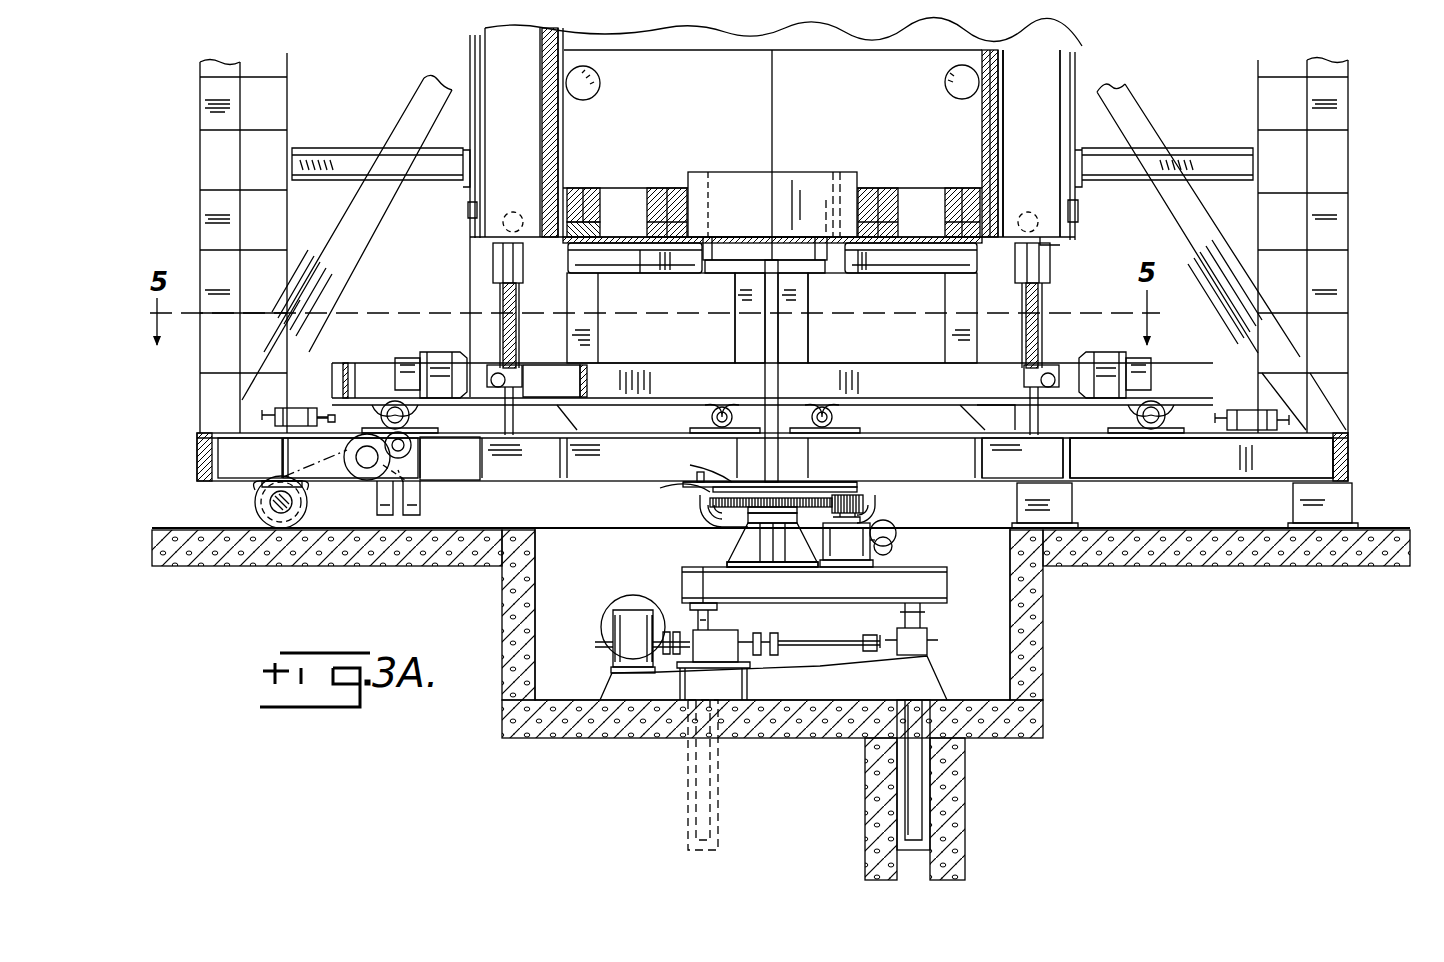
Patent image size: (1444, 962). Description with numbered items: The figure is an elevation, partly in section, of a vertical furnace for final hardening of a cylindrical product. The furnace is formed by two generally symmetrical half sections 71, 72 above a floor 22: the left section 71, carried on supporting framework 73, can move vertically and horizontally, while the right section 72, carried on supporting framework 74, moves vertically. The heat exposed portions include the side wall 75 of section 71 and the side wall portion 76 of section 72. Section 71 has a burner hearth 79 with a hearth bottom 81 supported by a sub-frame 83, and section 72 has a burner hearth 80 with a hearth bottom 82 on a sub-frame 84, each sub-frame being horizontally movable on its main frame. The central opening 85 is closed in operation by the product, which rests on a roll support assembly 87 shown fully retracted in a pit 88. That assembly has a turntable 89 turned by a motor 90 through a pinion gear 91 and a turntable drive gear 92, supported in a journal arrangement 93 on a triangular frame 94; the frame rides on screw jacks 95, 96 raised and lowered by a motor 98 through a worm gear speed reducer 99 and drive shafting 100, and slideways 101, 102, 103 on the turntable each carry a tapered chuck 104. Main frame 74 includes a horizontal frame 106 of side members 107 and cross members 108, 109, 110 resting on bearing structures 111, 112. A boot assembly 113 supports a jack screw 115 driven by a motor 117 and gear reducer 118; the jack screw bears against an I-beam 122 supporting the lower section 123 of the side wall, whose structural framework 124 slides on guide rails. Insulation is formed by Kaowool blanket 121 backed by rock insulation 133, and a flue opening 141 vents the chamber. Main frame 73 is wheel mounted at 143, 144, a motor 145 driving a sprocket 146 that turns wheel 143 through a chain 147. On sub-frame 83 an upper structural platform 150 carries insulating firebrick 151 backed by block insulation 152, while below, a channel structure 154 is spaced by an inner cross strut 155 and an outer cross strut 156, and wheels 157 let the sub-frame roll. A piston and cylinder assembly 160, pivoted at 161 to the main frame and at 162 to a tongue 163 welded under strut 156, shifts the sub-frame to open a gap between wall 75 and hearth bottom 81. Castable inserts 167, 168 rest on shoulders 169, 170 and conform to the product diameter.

The floor 22 is at (1362, 532).
The furnace half section 71 is at (468, 68).
The furnace half section 72 is at (1087, 118).
The supporting framework 73 is at (192, 152).
The supporting framework 74 is at (1357, 208).
The side wall 75 is at (576, 54).
The side wall portion 76 is at (888, 56).
The burner hearth 79 is at (660, 185).
The burner hearth 80 is at (952, 186).
The hearth bottom 81 is at (580, 192).
The hearth bottom 82 is at (868, 195).
The sub-frame 83 is at (598, 320).
The sub-frame 84 is at (938, 278).
The central opening 85 is at (715, 190).
The roll support assembly 87 is at (692, 512).
The pit 88 is at (578, 702).
The turntable 89 is at (695, 492).
The motor 90 is at (892, 545).
The pinion gear 91 is at (893, 523).
The turntable drive gear 92 is at (840, 493).
The journal arrangement 93 is at (762, 538).
The triangular frame 94 is at (935, 592).
The screw jack 95 is at (718, 636).
The screw jack 96 is at (927, 636).
The motor 98 is at (604, 628).
The worm gear speed reducer 99 is at (611, 662).
The drive shafting 100 is at (836, 643).
The slideway 101 is at (782, 492).
The slideway 102 is at (660, 488).
The slideway 103 is at (870, 492).
The tapered chuck 104 is at (700, 480).
The horizontally positioned frame 106 is at (1190, 491).
The side members 107 is at (1262, 480).
The cross member 108 is at (985, 458).
The cross member 109 is at (1075, 464).
The cross member 110 is at (1342, 456).
The bearing structure 111 is at (1074, 512).
The bearing structure 112 is at (1322, 522).
The boot assembly 113 is at (978, 405).
The jack screw 115 is at (1044, 302).
The motor 117 is at (455, 342).
The gear reducer 118 is at (1048, 348).
The ceramic fibre Kaowool blanket 121 is at (990, 62).
The I-beam 122 is at (1052, 272).
The lower section of furnace side wall 123 is at (1072, 82).
The structural framework 124 is at (1062, 234).
The rock insulation 133 is at (1030, 65).
The opening 141 is at (962, 63).
The wheel 143 is at (270, 540).
The wheel 144 is at (702, 522).
The motor 145 is at (375, 490).
The sprocket 146 is at (418, 492).
The chain 147 is at (322, 540).
The upper structural platform 150 is at (678, 265).
The insulating firebrick 151 is at (588, 205).
The block insulation 152 is at (598, 262).
The channel structure 154 is at (652, 372).
The inner cross strut 155 is at (585, 392).
The outer cross strut 156 is at (370, 352).
The wheels 157 is at (712, 412).
The piston and cylinder assembly 160 is at (292, 455).
The pivotal connection 161 is at (268, 418).
The pivotal connection 162 is at (338, 415).
The tongue 163 is at (488, 368).
The castable insert 167 is at (740, 172).
The castable insert 168 is at (815, 195).
The shoulder 169 is at (705, 237).
The shoulder 170 is at (848, 255).